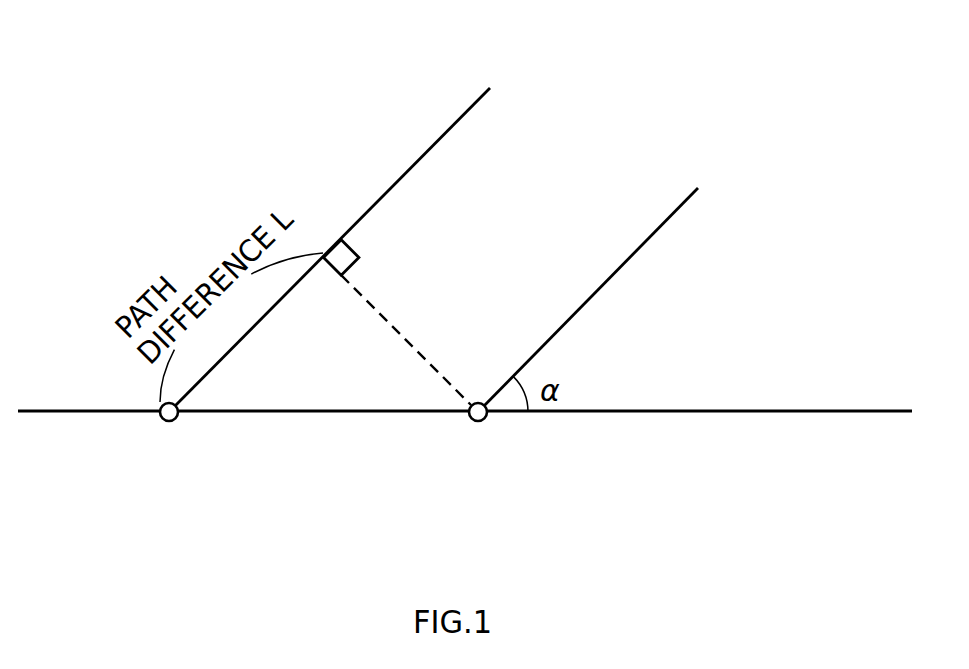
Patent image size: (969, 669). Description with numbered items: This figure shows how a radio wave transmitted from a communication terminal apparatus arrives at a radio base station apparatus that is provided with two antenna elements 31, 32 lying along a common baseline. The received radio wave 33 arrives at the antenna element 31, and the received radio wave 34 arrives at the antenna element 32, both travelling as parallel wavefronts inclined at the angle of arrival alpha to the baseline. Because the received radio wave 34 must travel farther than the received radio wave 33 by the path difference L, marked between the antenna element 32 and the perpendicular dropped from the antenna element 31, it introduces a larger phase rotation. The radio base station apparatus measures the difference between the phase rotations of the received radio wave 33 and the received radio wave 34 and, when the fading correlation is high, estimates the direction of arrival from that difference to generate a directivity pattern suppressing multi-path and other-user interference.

The antenna element 31 is at (536, 462).
The antenna element 32 is at (229, 462).
The received radio wave 33 is at (721, 267).
The received radio wave 34 is at (442, 137).